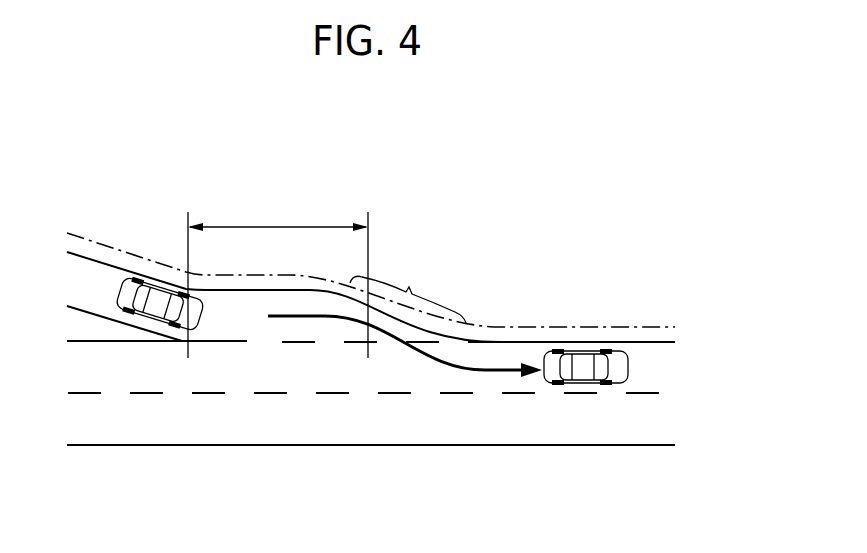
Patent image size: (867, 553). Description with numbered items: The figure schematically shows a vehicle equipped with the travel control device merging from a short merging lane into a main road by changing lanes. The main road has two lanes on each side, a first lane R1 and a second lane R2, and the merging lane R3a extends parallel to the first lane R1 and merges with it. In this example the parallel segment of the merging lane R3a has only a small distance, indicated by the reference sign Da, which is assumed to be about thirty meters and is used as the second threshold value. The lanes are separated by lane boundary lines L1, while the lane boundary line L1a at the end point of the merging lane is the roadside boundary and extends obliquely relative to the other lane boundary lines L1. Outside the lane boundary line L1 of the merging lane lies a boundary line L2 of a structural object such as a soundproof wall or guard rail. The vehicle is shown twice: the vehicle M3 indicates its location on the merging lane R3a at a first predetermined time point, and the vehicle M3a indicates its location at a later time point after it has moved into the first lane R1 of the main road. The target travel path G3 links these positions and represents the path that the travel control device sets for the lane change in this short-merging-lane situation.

The vehicle M3 is at (180, 292).
The vehicle M3a is at (573, 372).
The distance of parallel segment Da is at (278, 279).
The lane boundary line L1a is at (412, 289).
The lane boundary line L1 is at (543, 342).
The boundary line of structural object L2 is at (588, 327).
The first lane R1 is at (219, 388).
The second lane R2 is at (205, 425).
The merging lane R3a is at (250, 340).
The target travel path G3 is at (447, 364).